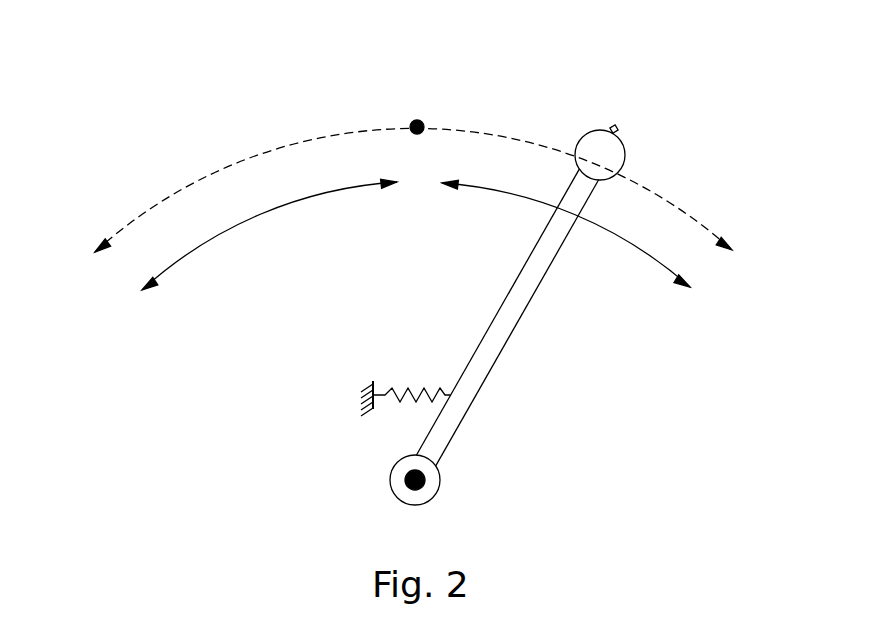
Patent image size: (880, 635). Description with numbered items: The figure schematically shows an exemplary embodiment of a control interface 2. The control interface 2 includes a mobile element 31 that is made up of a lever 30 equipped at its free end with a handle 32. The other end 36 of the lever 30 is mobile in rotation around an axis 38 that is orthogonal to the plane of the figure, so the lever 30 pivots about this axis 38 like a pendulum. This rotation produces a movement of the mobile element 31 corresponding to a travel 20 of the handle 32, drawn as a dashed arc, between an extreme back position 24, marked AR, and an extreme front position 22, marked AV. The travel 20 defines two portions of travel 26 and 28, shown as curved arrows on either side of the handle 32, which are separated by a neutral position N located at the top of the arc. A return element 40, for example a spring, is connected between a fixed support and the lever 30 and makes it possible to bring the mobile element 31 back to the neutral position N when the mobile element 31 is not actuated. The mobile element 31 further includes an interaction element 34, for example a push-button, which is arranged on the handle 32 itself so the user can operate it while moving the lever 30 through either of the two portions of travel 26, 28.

The control interface 2 is at (122, 88).
The travel 20 is at (294, 141).
The neutral position N is at (417, 120).
The extreme front position 22 is at (735, 246).
The extreme back position 24 is at (92, 248).
The portion of travel 26 is at (197, 246).
The portion of travel 28 is at (621, 239).
The lever 30 is at (521, 323).
The mobile element 31 is at (518, 378).
The handle 32 is at (627, 157).
The interaction element 34 is at (618, 126).
The end of the lever 36 is at (439, 481).
The axis 38 is at (392, 481).
The return element 40 is at (398, 390).